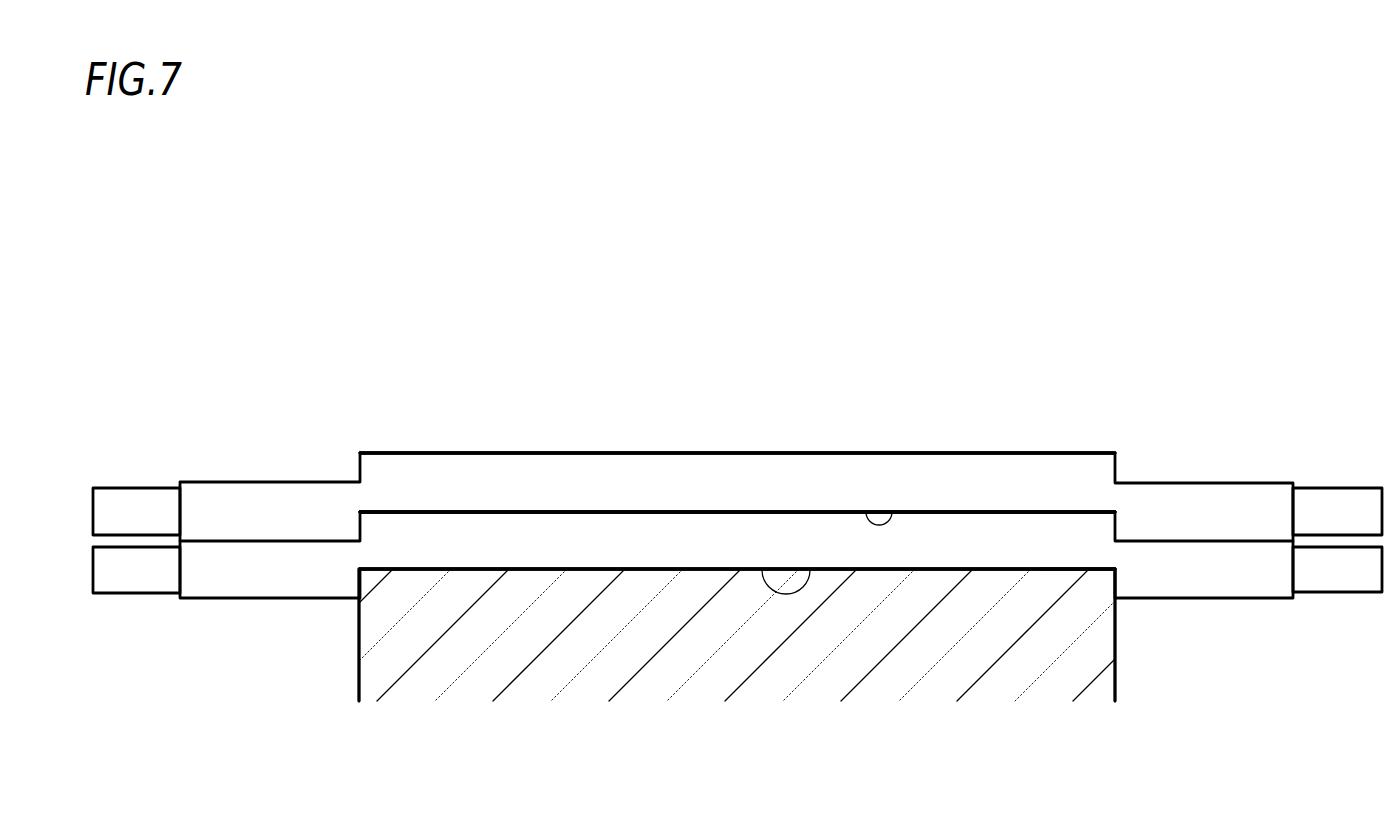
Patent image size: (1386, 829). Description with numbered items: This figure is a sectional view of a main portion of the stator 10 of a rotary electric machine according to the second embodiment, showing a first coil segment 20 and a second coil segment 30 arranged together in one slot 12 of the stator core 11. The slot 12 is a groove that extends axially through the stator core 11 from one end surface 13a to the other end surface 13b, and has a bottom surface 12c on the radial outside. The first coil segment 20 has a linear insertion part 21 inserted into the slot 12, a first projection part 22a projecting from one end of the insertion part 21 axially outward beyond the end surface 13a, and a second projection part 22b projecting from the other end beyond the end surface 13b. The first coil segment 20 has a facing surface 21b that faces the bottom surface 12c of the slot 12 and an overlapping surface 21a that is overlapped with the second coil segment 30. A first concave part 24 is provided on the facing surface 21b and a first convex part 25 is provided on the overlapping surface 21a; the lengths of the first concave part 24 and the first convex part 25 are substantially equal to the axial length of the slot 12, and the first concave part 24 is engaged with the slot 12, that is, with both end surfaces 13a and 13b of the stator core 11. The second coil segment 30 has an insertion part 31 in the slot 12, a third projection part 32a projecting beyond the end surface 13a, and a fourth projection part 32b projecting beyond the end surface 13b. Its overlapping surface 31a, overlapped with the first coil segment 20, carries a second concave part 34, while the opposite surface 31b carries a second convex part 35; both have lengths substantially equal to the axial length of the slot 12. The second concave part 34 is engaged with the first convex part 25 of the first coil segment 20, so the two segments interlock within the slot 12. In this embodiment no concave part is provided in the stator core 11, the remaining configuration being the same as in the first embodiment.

The stator 10 is at (245, 340).
The stator core 11 is at (1117, 673).
The slot 12 is at (993, 566).
The bottom surface 12c is at (1058, 568).
The end surface 13a is at (1117, 693).
The end surface 13b is at (358, 623).
The first coil segment 20 is at (1237, 598).
The insertion part 21 is at (563, 533).
The overlapping surface 21a is at (491, 508).
The facing surface 21b is at (467, 571).
The first projection part 22a is at (1270, 598).
The second projection part 22b is at (233, 587).
The first concave part 24 is at (810, 570).
The first convex part 25 is at (698, 512).
The second coil segment 30 is at (1155, 452).
The insertion part 31 is at (632, 482).
The overlapping surface 31a is at (424, 526).
The surface 31b is at (755, 452).
The third projection part 32a is at (1228, 481).
The fourth projection part 32b is at (262, 483).
The second concave part 34 is at (892, 512).
The second convex part 35 is at (952, 453).